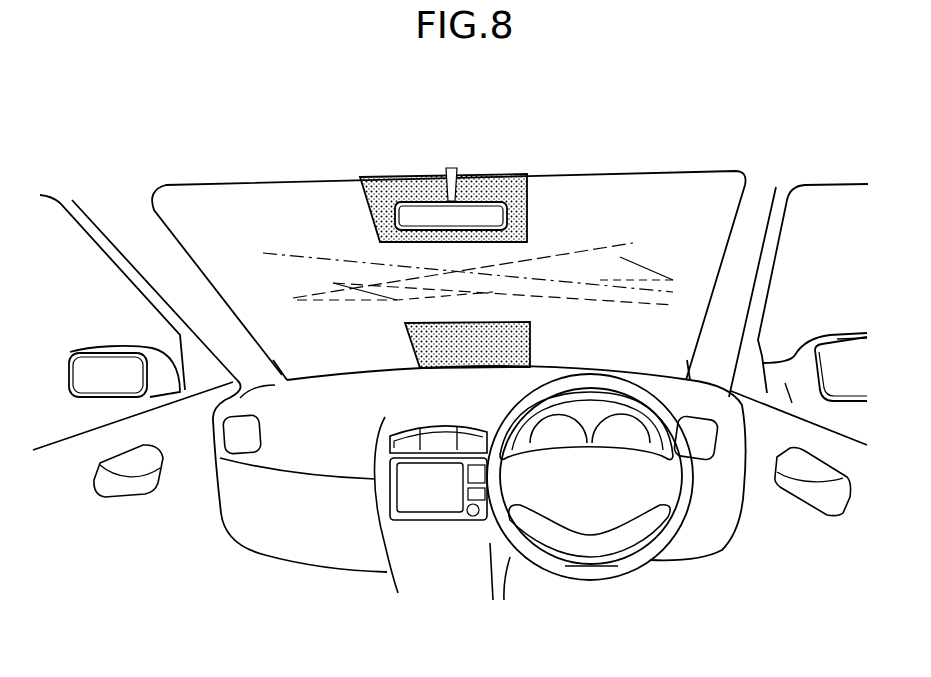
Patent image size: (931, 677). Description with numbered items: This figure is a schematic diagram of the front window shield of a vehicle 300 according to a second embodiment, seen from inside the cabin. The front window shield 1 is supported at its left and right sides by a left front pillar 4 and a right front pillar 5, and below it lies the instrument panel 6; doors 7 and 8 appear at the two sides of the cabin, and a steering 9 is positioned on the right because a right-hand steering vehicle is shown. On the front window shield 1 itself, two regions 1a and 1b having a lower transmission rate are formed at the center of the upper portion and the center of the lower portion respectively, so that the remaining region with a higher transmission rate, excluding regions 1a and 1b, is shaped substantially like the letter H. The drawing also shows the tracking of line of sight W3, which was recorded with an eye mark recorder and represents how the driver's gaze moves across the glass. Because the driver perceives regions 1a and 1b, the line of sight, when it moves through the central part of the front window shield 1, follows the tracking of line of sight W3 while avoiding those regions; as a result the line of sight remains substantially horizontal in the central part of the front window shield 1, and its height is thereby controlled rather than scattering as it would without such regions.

The vehicle 300 is at (663, 132).
The front window shield 1 is at (253, 233).
The region with a lower transmission rate 1a is at (390, 194).
The region with a lower transmission rate 1b is at (512, 323).
The tracking of line of sight W3 is at (588, 253).
The left front pillar 4 is at (180, 283).
The right front pillar 5 is at (743, 273).
The instrument panel 6 is at (323, 407).
The door 7 is at (63, 474).
The door 8 is at (842, 468).
The steering 9 is at (670, 527).